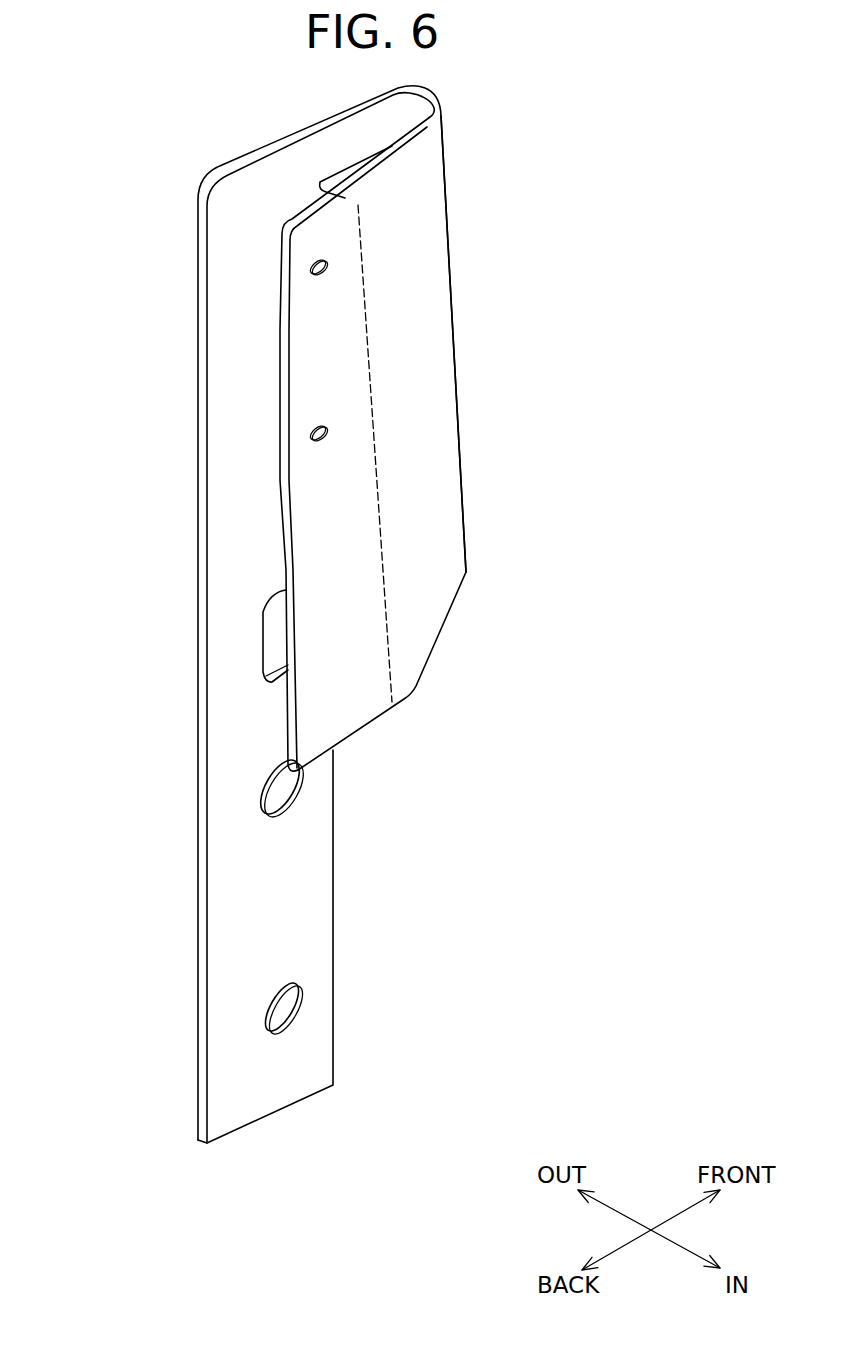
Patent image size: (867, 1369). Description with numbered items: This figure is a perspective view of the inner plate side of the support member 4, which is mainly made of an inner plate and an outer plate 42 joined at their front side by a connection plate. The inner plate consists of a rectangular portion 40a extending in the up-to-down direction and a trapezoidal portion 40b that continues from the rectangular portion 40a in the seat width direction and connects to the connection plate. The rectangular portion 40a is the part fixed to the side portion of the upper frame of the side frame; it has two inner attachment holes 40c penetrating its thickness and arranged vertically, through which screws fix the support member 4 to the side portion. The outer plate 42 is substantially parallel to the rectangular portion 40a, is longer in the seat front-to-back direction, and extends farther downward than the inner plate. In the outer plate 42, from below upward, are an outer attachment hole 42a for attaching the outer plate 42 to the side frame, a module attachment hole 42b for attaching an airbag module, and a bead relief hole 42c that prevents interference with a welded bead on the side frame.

The support member 4 is at (147, 250).
The rectangular portion 40a is at (337, 360).
The trapezoidal portion 40b is at (410, 290).
The inner attachment hole 40c is at (331, 269).
The outer plate 42 is at (275, 1078).
The outer attachment hole 42a is at (270, 997).
The module attachment hole 42b is at (262, 777).
The bead relief hole 42c is at (262, 648).